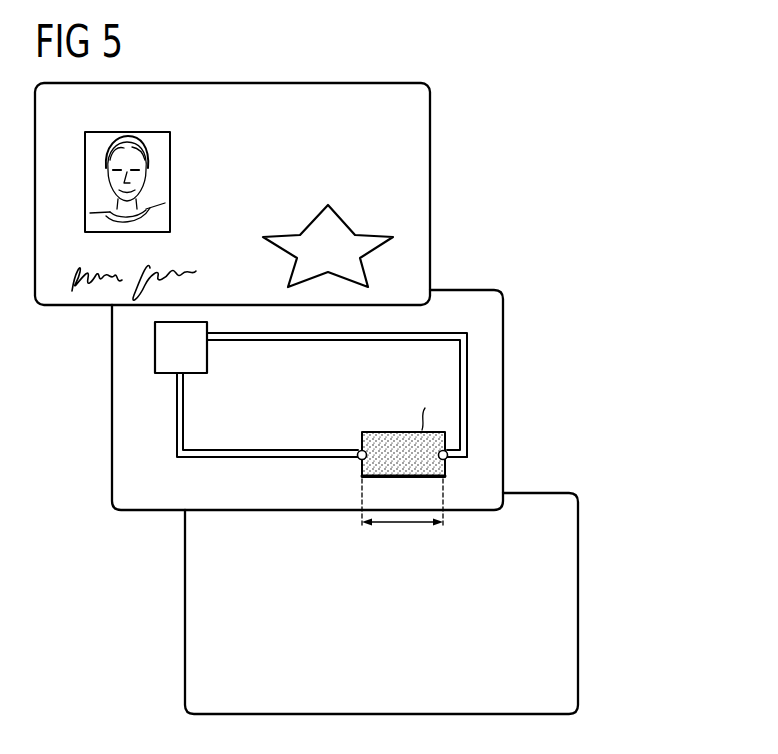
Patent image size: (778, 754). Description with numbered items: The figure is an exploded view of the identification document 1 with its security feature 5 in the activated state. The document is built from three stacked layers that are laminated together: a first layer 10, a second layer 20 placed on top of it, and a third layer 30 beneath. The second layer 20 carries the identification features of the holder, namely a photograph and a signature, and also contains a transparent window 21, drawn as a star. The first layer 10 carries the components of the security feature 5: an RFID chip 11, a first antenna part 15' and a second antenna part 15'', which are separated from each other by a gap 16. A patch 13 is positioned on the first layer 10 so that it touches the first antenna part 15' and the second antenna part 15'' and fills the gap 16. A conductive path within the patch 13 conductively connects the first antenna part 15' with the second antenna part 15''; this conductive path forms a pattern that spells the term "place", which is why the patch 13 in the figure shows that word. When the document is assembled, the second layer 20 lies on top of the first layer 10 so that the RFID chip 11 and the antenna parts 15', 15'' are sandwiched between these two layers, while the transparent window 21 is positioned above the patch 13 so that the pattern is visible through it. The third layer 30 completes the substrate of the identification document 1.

The identification document 1 is at (635, 102).
The security feature 5 is at (333, 338).
The second layer 20 is at (296, 194).
The transparent window 21 is at (370, 210).
The first layer 10 is at (347, 442).
The RFID chip 11 is at (180, 347).
The patch 13 is at (373, 430).
The first antenna part 15' is at (279, 506).
The second antenna part 15'' is at (474, 477).
The gap 16 is at (400, 528).
The third layer 30 is at (594, 612).